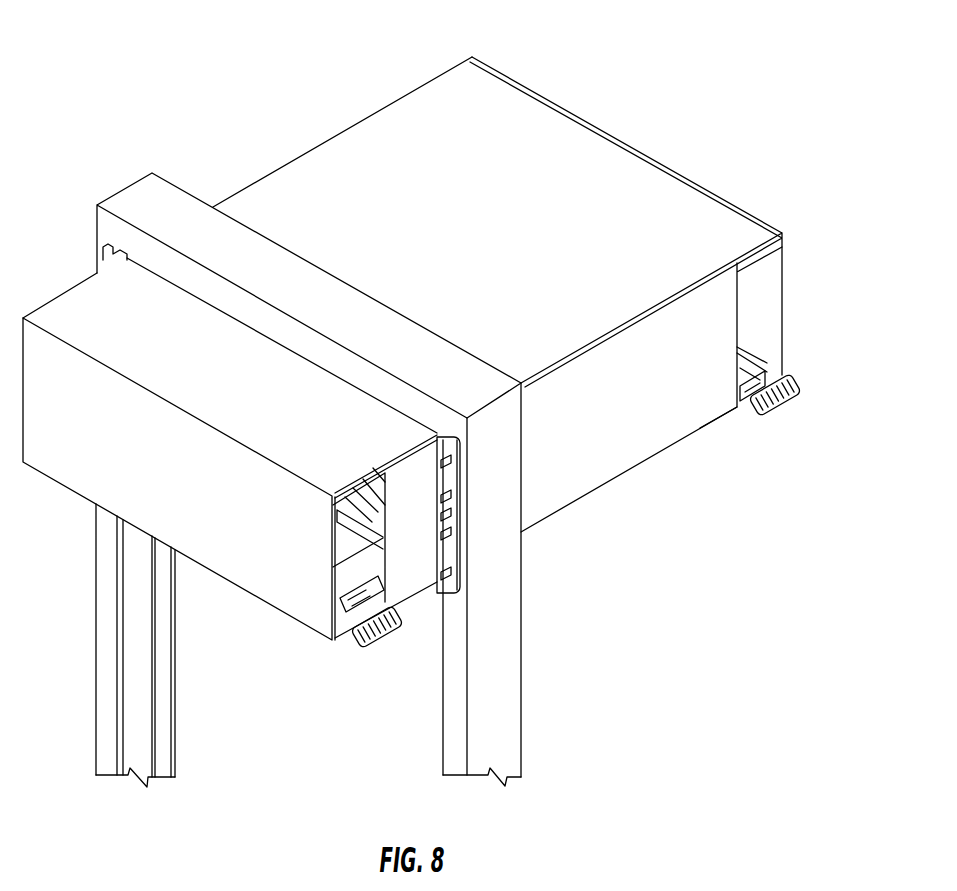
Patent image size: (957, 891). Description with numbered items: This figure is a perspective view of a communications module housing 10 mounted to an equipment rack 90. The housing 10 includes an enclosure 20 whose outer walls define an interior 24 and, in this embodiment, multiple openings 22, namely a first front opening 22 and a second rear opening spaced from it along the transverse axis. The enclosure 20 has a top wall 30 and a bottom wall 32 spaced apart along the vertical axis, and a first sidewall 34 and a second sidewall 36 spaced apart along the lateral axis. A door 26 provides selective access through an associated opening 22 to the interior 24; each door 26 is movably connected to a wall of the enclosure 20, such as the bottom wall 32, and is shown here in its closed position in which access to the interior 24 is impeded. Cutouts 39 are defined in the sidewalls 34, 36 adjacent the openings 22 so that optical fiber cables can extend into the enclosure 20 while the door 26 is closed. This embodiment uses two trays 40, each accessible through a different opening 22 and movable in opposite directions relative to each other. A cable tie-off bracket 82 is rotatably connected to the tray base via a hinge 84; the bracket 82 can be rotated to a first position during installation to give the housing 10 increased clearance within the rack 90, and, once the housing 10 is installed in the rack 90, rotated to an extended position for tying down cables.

The housing 10 is at (575, 72).
The enclosure 20 is at (369, 145).
The opening 22 is at (332, 577).
The interior 24 is at (356, 537).
The door 26 is at (62, 462).
The top wall 30 is at (408, 118).
The bottom wall 32 is at (590, 498).
The first sidewall 34 is at (272, 167).
The second sidewall 36 is at (637, 422).
The cutout 39 is at (358, 489).
The tray 40 is at (387, 478).
The cable tie-off bracket 82 is at (380, 646).
The hinge 84 is at (356, 628).
The equipment rack 90 is at (487, 661).